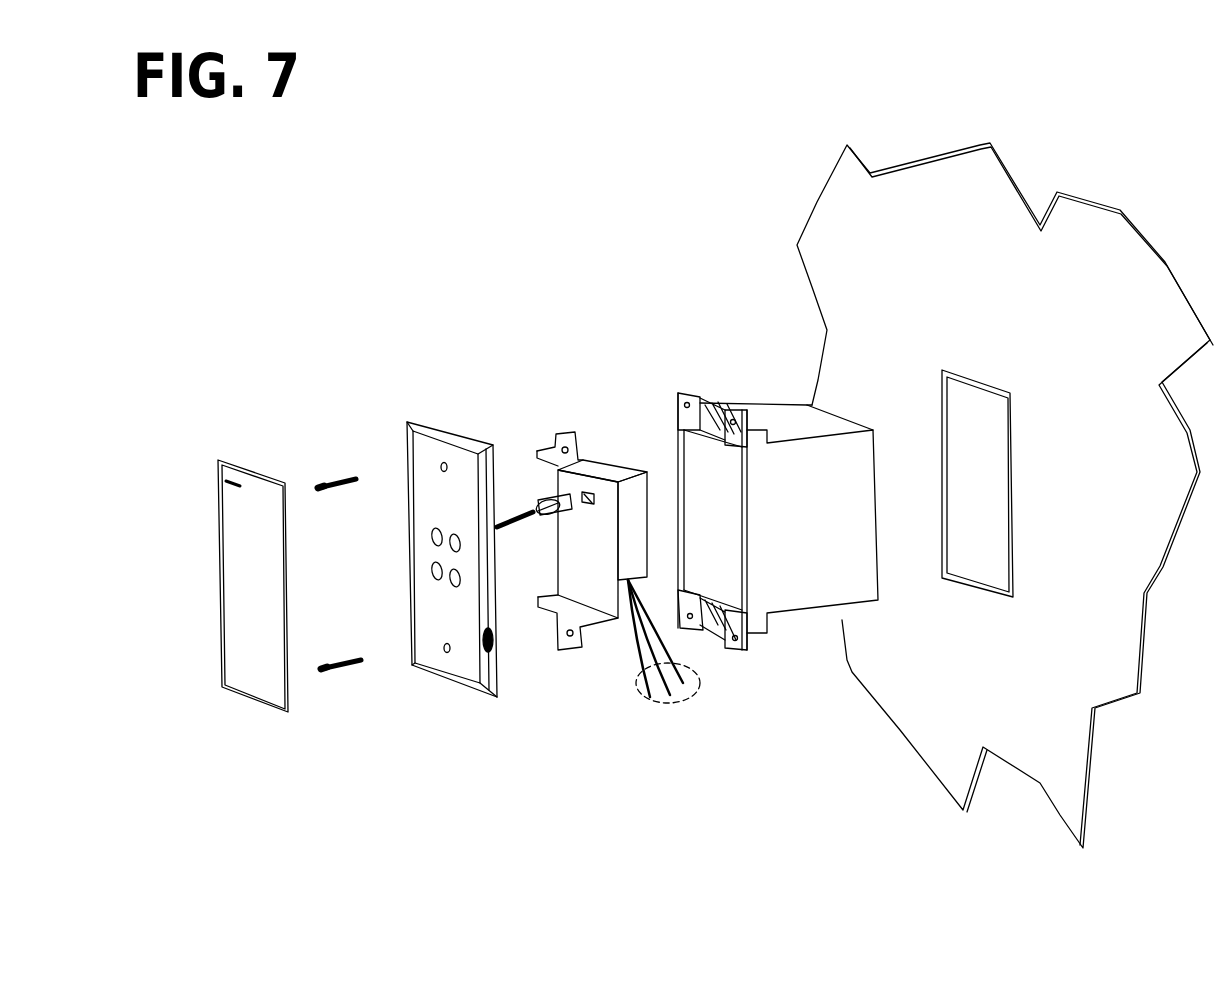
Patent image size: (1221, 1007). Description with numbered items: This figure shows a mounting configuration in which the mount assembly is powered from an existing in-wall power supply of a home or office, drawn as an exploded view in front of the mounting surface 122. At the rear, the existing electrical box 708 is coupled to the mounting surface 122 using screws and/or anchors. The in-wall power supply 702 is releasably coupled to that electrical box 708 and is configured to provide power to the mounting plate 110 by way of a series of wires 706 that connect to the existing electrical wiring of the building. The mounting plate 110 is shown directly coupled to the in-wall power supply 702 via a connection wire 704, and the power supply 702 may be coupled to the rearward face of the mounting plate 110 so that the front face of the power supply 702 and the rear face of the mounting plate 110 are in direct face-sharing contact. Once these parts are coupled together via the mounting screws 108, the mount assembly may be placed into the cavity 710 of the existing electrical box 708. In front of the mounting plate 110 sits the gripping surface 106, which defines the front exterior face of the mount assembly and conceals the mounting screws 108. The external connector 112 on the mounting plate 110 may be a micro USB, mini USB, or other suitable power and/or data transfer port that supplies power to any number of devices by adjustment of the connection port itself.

The gripping surface 106 is at (238, 513).
The mounting screws 108 is at (340, 672).
The mounting plate 110 is at (430, 452).
The external connector 112 is at (495, 637).
The mounting surface 122 is at (1040, 677).
The in-wall power supply 702 is at (578, 595).
The connection wire 704 is at (543, 505).
The wires 706 is at (675, 692).
The electrical box 708 is at (817, 455).
The cavity 710 is at (703, 485).